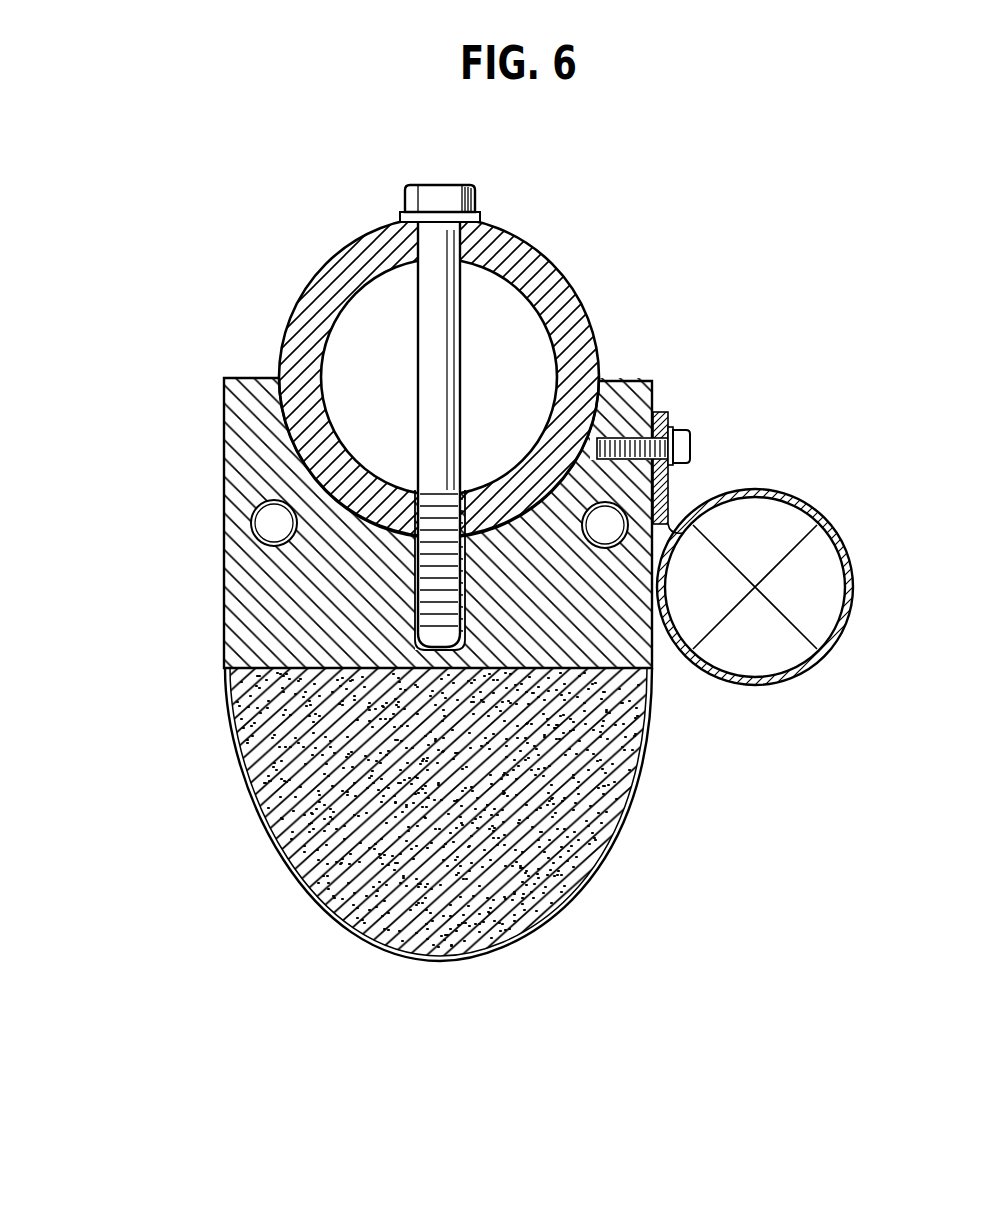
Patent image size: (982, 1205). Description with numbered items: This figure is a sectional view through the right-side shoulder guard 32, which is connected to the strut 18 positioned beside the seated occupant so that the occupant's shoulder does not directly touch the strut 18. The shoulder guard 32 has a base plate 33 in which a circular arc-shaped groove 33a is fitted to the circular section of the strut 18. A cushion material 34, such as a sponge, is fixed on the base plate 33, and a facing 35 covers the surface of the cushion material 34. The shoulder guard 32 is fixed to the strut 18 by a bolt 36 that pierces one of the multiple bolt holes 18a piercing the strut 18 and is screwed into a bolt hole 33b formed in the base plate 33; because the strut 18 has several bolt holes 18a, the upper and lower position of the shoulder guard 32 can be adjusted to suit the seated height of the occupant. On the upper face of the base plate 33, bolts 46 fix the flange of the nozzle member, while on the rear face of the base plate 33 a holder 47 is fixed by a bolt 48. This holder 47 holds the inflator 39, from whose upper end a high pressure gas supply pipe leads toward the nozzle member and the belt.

The strut 18 is at (602, 309).
The bolt hole 18a is at (447, 243).
The shoulder guard 32 is at (373, 707).
The base plate 33 is at (218, 519).
The circular arc-shaped groove 33a is at (372, 490).
The bolt hole 33b is at (428, 572).
The cushion material 34 is at (282, 836).
The facing 35 is at (316, 906).
The bolt 36 is at (446, 197).
The inflator 39 is at (745, 527).
The bolt 46 is at (272, 548).
The holder 47 is at (763, 685).
The bolt 48 is at (683, 446).